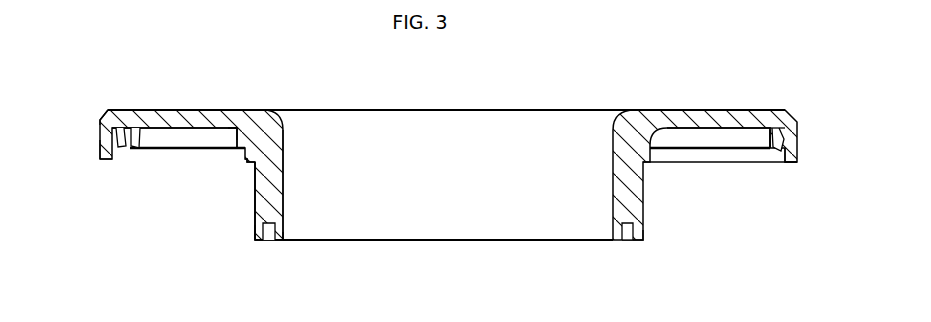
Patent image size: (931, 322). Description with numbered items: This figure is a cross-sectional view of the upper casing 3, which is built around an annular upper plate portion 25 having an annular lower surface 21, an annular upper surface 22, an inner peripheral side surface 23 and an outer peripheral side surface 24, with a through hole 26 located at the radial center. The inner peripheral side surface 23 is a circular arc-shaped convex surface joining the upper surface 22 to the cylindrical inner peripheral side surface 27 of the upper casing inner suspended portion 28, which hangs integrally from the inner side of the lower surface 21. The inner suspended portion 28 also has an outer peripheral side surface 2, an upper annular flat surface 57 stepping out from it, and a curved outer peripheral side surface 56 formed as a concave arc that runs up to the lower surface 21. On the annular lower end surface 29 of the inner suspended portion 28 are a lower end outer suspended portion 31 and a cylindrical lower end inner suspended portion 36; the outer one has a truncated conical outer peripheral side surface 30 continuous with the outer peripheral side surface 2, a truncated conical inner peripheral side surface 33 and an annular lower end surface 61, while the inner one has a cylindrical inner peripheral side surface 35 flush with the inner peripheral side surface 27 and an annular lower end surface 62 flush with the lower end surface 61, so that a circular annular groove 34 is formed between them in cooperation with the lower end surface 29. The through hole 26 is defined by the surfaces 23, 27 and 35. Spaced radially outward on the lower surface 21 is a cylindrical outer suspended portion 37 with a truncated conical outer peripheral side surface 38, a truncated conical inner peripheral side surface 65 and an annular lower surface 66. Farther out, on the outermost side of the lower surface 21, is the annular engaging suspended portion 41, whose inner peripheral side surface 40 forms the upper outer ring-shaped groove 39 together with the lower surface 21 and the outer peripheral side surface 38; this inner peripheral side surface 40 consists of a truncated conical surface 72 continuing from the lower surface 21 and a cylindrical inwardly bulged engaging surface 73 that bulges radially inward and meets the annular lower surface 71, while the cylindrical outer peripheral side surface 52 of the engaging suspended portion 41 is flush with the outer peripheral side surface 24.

The outer peripheral side surface 2 is at (254, 188).
The upper casing 3 is at (165, 106).
The lower surface 21 is at (698, 129).
The upper surface 22 is at (690, 118).
The inner peripheral side surface 23 is at (440, 120).
The outer peripheral side surface 24 is at (99, 132).
The upper plate portion 25 is at (723, 121).
The through hole 26 is at (425, 210).
The inner peripheral side surface 27 is at (535, 215).
The upper casing inner suspended portion 28 is at (277, 182).
The lower end surface 29 is at (270, 241).
The outer peripheral side surface 30 is at (256, 233).
The lower end outer suspended portion 31 is at (256, 241).
The inner peripheral side surface 33 is at (628, 242).
The circular annular groove 34 is at (284, 241).
The inner peripheral side surface 35 is at (373, 232).
The lower end inner suspended portion 36 is at (618, 232).
The outer suspended portion 37 is at (134, 132).
The outer peripheral side surface 38 is at (126, 142).
The upper outer ring-shaped groove 39 is at (774, 127).
The inner peripheral side surface 40 is at (771, 139).
The engaging suspended portion 41 is at (106, 151).
The outer peripheral side surface 52 is at (100, 154).
The curved outer peripheral side surface 56 is at (237, 130).
The upper annular flat surface 57 is at (250, 172).
The lower end surface 61 is at (640, 243).
The lower end surface 62 is at (478, 242).
The inner peripheral side surface 65 is at (213, 140).
The lower surface 66 is at (738, 150).
The lower surface 71 is at (787, 164).
The truncated conical surface 72 is at (119, 132).
The inwardly bulged engaging surface 73 is at (777, 151).